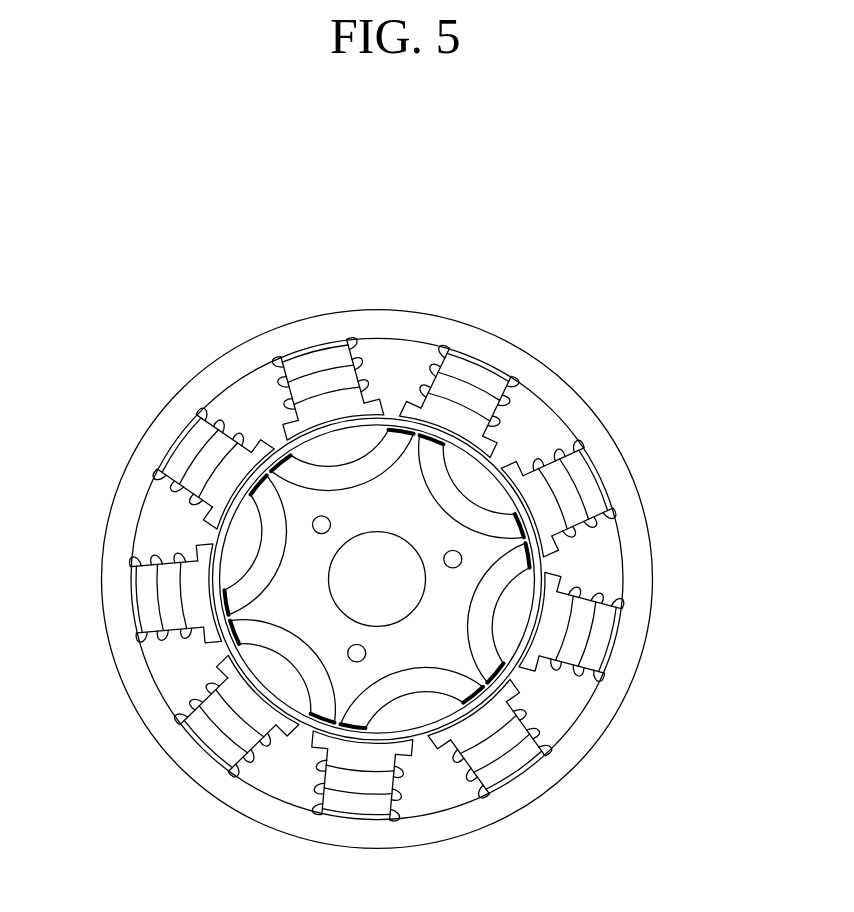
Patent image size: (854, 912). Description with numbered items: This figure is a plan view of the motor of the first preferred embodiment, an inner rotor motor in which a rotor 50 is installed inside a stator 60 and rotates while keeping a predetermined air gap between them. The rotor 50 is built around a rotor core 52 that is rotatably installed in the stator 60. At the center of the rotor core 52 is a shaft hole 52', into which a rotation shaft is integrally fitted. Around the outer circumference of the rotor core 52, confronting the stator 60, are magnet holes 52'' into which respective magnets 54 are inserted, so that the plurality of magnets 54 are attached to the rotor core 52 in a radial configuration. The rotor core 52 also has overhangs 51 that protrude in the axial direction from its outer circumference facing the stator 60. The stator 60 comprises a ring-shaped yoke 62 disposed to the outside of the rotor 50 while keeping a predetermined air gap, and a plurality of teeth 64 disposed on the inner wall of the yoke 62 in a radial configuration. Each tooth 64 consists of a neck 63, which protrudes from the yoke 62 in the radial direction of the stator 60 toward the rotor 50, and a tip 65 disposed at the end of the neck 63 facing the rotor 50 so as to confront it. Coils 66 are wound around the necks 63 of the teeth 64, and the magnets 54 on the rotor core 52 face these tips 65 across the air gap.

The rotor 50 is at (550, 242).
The overhang 51 is at (473, 482).
The rotor core 52 is at (377, 477).
The shaft hole 52' is at (283, 452).
The magnet hole 52'' is at (181, 488).
The magnet 54 is at (428, 468).
The stator 60 is at (656, 530).
The yoke 62 is at (609, 696).
The neck 63 is at (503, 744).
The tooth 64 is at (667, 802).
The tip 65 is at (507, 697).
The coil 66 is at (508, 783).